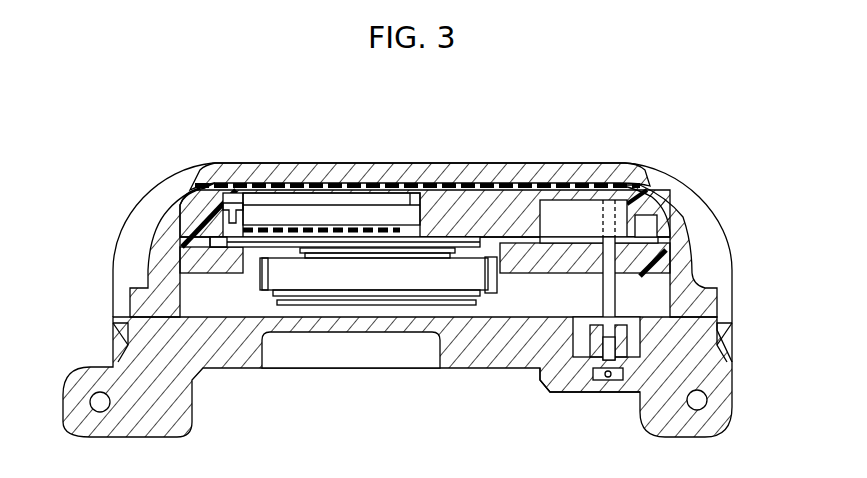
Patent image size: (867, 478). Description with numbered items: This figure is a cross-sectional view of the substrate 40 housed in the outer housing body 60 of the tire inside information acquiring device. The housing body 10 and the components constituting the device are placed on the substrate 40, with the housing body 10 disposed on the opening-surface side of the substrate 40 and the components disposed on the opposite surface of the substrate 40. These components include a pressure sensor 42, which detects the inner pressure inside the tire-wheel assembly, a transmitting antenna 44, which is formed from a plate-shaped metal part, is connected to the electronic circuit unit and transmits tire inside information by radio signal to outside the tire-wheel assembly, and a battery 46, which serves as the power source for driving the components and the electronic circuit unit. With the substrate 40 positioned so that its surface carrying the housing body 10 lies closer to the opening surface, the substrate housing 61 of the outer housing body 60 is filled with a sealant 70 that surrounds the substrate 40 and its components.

The housing body 10 is at (358, 280).
The substrate 40 is at (320, 247).
The pressure sensor 42 is at (558, 212).
The transmitting antenna 44 is at (643, 223).
The battery 46 is at (392, 217).
The outer housing body 60 is at (690, 133).
The substrate housing 61 is at (195, 223).
The sealant 70 is at (215, 190).